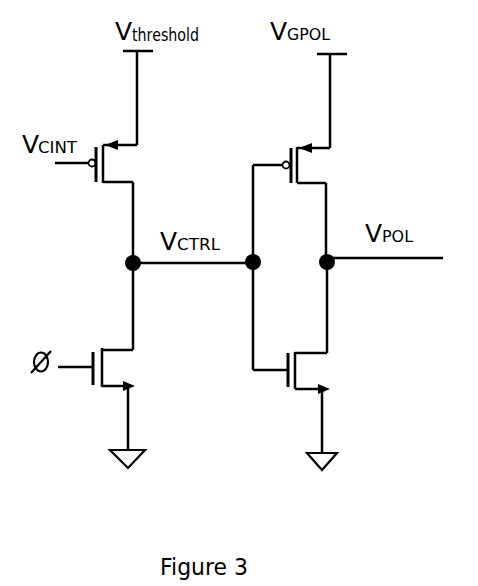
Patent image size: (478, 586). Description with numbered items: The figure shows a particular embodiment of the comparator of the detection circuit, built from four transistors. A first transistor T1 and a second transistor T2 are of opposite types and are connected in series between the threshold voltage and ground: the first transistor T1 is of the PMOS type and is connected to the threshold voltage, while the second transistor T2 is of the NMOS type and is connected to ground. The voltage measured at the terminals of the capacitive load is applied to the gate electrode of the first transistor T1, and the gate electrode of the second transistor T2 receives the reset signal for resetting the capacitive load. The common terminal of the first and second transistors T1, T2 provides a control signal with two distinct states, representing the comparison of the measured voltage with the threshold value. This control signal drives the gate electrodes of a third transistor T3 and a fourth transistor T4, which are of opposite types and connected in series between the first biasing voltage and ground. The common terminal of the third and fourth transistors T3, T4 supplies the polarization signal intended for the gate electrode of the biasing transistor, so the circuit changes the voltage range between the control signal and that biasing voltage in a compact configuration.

The first transistor T1 is at (105, 201).
The second transistor T2 is at (106, 365).
The third transistor T3 is at (302, 256).
The fourth transistor T4 is at (300, 366).